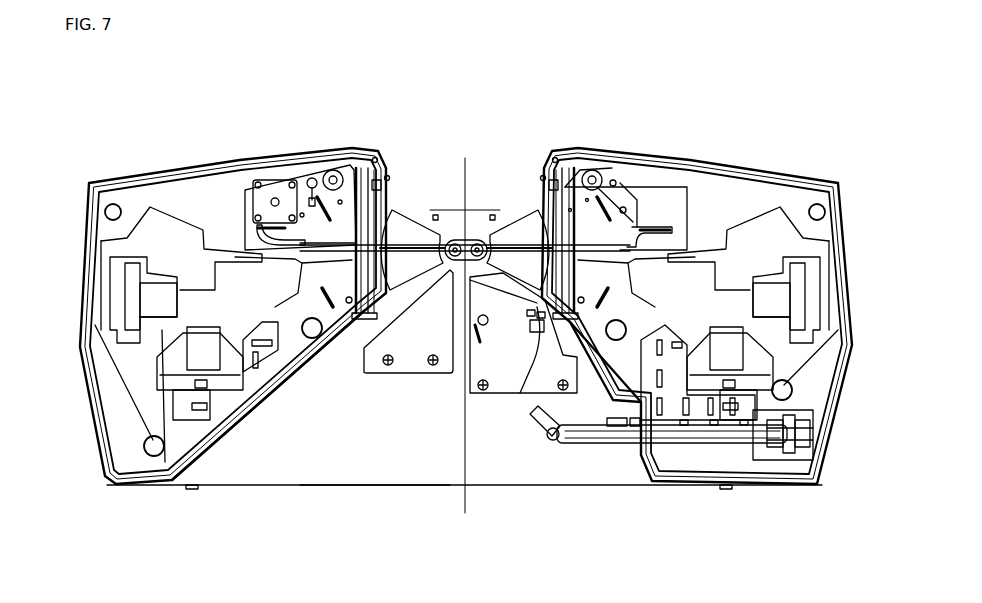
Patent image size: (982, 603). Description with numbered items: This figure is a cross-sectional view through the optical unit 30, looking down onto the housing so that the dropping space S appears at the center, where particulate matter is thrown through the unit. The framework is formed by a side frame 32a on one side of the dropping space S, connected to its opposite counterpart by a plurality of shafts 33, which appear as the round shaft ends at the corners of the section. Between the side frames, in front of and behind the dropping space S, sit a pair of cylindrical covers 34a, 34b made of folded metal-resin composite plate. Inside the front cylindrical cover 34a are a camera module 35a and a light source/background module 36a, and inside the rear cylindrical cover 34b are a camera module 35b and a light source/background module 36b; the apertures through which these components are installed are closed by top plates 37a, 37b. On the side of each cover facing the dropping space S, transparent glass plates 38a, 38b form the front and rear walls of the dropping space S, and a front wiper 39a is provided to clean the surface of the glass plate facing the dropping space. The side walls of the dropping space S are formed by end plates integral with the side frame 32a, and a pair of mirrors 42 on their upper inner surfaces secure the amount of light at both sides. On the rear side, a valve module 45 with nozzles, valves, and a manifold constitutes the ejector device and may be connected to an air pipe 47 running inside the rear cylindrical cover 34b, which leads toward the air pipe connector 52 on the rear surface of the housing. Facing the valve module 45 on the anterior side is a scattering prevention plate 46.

The optical unit 30 is at (187, 95).
The dropping space S is at (481, 151).
The side frame 32a is at (464, 489).
The shafts 33 is at (112, 204).
The cylindrical cover 34a is at (237, 423).
The cylindrical cover 34b is at (605, 387).
The camera module 35a is at (172, 240).
The camera module 35b is at (748, 240).
The light source/background module 36a is at (305, 235).
The light source/background module 36b is at (615, 215).
The top plate 37a is at (242, 166).
The top plate 37b is at (663, 165).
The transparent glass plate 38a is at (384, 210).
The transparent glass plate 38b is at (550, 203).
The front wiper 39a is at (375, 288).
The mirrors 42 is at (420, 233).
The valve module 45 is at (512, 352).
The scattering prevention plate 46 is at (412, 350).
The air pipe 47 is at (685, 435).
The air pipe connector 52 is at (800, 447).